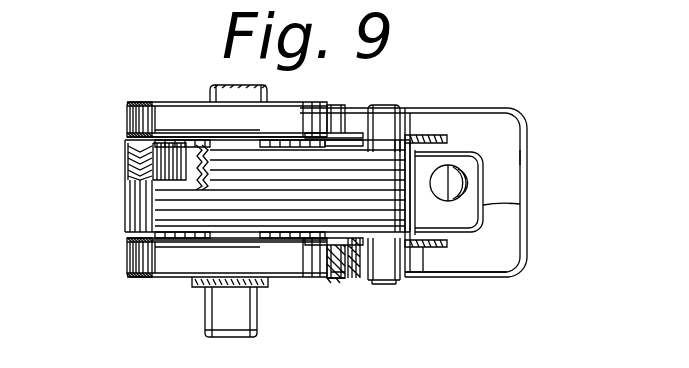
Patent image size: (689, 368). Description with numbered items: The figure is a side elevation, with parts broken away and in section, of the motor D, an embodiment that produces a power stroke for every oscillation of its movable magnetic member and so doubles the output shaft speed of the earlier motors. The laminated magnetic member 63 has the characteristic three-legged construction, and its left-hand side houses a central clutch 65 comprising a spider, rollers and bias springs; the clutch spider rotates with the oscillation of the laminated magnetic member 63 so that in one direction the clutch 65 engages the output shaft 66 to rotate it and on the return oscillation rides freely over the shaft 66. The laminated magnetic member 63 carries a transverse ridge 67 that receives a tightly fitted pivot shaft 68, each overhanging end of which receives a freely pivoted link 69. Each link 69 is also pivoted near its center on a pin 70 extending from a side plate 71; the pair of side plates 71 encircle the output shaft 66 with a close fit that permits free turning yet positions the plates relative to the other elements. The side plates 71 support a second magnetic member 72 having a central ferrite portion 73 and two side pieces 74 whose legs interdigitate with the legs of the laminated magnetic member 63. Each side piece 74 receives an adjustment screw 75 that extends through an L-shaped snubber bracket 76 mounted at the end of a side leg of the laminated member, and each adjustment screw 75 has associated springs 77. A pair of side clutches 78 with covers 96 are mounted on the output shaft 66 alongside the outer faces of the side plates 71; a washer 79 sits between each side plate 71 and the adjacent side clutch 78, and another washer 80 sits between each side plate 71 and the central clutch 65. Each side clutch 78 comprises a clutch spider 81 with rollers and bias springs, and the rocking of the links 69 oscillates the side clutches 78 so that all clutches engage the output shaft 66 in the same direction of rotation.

The laminated magnetic member 63 is at (122, 190).
The clutch 65 is at (126, 148).
The output shaft 66 is at (260, 315).
The transverse ridge 67 is at (410, 160).
The pivot shaft 68 is at (383, 282).
The link 69 is at (358, 104).
The pin 70 is at (345, 104).
The side plate 71 is at (437, 136).
The second magnetic member 72 is at (528, 156).
The central ferrite portion 73 is at (527, 110).
The side piece 74 is at (495, 122).
The adjustment screw 75 is at (452, 170).
The L-shaped snubber bracket 76 is at (490, 213).
The springs 77 is at (482, 183).
The side clutch 78 is at (123, 110).
The washer 79 is at (168, 132).
The washer 80 is at (186, 140).
The clutch spider 81 is at (278, 112).
The cover 96 is at (137, 104).
The motor D is at (540, 196).